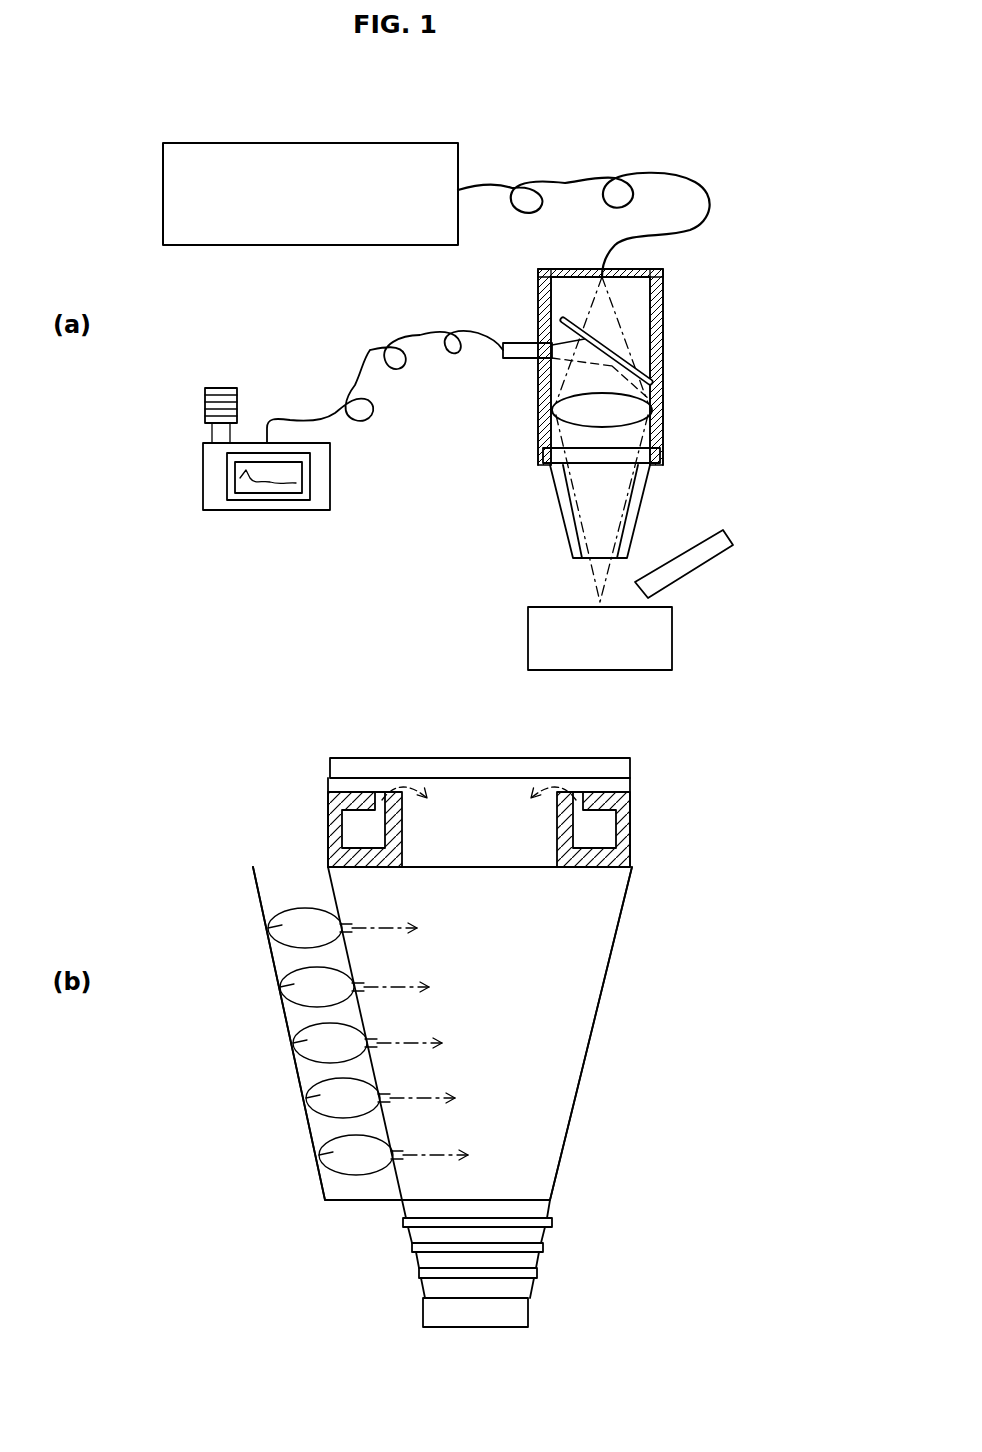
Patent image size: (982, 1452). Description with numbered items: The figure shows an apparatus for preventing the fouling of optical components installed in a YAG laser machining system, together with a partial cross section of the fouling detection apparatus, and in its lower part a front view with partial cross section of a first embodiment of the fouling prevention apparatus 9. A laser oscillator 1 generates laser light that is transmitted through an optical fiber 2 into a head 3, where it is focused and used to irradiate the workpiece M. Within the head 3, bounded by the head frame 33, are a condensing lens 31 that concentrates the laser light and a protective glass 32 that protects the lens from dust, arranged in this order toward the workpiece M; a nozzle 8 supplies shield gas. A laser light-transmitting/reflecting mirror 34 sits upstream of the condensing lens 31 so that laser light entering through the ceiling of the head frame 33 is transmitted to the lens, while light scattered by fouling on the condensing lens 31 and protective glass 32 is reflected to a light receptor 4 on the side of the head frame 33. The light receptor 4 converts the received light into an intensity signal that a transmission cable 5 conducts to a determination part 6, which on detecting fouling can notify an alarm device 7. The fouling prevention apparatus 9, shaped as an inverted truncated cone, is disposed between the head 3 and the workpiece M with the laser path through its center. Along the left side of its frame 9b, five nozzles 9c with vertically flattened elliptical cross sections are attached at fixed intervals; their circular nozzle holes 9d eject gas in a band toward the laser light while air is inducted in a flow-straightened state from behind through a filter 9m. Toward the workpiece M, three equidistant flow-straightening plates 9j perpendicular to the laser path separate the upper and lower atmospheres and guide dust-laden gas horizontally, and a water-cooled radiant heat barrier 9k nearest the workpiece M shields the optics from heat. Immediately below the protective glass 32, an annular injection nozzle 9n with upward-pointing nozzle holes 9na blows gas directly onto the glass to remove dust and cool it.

The laser oscillator 1 is at (245, 143).
The optical fiber 2 is at (584, 219).
The head 3 is at (674, 308).
The light receptor 4 is at (512, 358).
The transmission cable 5 is at (360, 345).
The determination part 6 is at (222, 510).
The alarm device 7 is at (216, 388).
The nozzle 8 is at (718, 548).
The fouling prevention apparatus 9 is at (630, 522).
The condensing lens 31 is at (656, 402).
The protective glass 32 is at (650, 456).
The head frame 33 is at (538, 428).
The laser light-transmitting/reflecting mirror 34 is at (590, 338).
The workpiece M is at (566, 660).
The frame 9b is at (577, 1093).
The nozzles 9c is at (268, 928).
The nozzle holes 9d is at (348, 924).
The flow-straightening plates 9j is at (537, 1273).
The radiant heat barrier 9k is at (528, 1312).
The filter 9m is at (322, 1185).
The injection nozzle 9n is at (330, 835).
The nozzle holes 9na is at (378, 800).